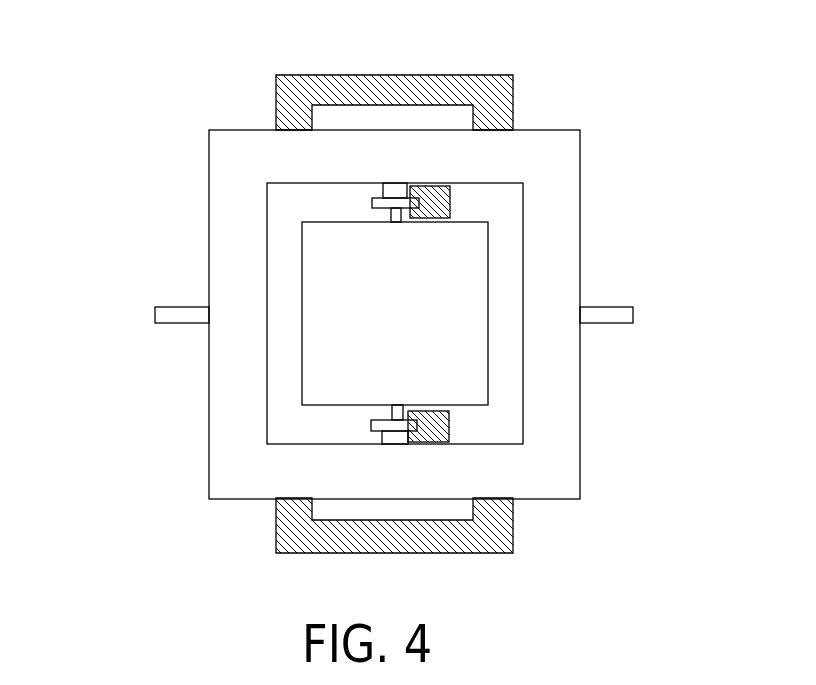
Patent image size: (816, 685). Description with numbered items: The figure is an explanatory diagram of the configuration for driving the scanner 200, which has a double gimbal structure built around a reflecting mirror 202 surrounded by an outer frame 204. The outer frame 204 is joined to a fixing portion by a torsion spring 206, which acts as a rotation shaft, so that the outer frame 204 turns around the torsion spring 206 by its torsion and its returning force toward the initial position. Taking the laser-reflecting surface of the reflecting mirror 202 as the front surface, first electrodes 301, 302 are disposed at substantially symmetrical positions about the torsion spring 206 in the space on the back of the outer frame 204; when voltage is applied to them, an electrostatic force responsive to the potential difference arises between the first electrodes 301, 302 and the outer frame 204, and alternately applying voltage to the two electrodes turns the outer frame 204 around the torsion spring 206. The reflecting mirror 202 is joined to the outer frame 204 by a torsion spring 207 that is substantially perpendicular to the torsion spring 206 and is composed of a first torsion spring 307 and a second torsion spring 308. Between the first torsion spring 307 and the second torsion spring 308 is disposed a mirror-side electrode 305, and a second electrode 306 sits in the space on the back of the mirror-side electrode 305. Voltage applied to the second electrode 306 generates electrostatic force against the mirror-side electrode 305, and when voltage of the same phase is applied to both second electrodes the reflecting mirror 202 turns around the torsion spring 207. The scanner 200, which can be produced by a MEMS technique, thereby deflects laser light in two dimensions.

The scanner 200 is at (584, 111).
The reflecting mirror 202 is at (468, 290).
The outer frame 204 is at (562, 463).
The torsion spring 206 is at (178, 313).
The torsion spring 207 is at (117, 423).
The first electrode 301 is at (513, 538).
The first electrode 302 is at (517, 59).
The mirror-side electrode 305 is at (372, 203).
The second electrode 306 is at (449, 203).
The first torsion spring 307 is at (395, 437).
The second torsion spring 308 is at (390, 408).